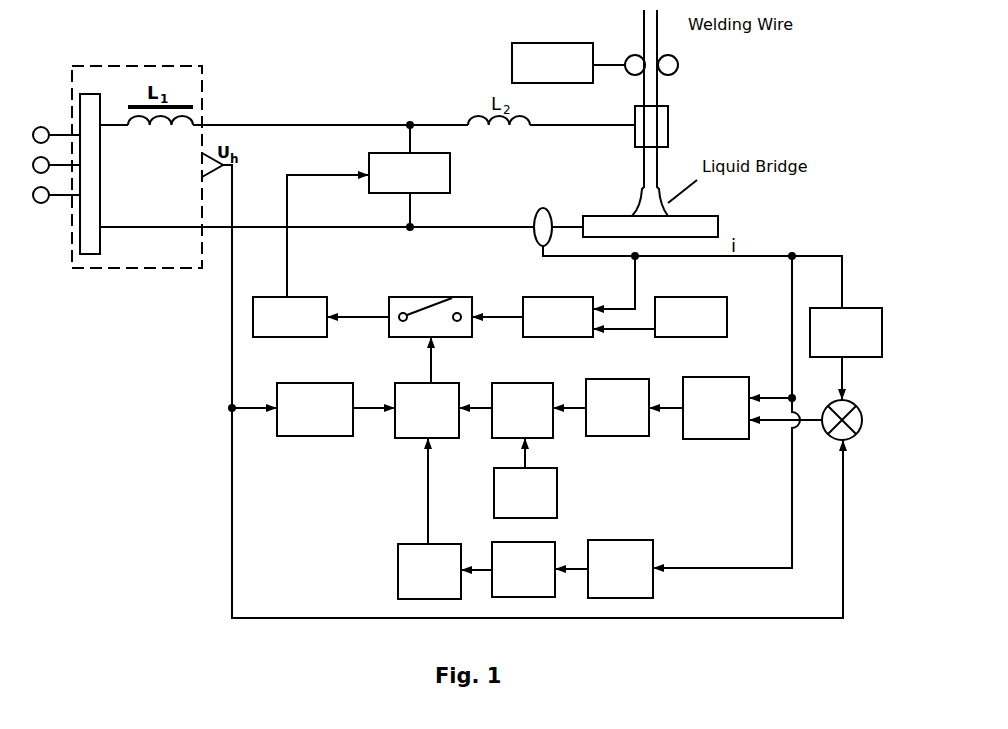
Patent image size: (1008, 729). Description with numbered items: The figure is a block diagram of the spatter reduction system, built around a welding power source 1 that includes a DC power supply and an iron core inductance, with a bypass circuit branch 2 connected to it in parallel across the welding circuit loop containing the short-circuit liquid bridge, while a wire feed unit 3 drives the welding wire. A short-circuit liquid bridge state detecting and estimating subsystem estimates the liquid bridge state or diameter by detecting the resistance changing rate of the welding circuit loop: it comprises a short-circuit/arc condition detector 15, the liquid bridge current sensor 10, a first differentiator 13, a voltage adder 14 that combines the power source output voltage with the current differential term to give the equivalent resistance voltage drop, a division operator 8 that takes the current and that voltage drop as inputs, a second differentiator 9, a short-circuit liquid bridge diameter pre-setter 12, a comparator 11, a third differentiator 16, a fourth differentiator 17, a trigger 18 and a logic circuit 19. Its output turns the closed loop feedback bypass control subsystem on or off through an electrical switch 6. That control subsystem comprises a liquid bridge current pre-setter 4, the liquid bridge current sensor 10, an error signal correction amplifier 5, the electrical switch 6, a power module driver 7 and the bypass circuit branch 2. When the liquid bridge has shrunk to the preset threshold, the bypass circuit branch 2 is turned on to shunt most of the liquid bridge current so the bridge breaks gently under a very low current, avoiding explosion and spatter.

The welding power source 1 is at (117, 167).
The bypass circuit branch 2 is at (409, 173).
The wire feed drive 3 is at (552, 63).
The liquid bridge current pre-setter 4 is at (691, 317).
The error signal correction amplifier 5 is at (558, 317).
The electrical switch 6 is at (430, 317).
The power module driver 7 is at (290, 317).
The division operator 8 is at (716, 408).
The second differentiator 9 is at (617, 407).
The liquid bridge current sensor 10 is at (547, 213).
The comparator 11 is at (522, 410).
The short-circuit liquid bridge diameter pre-setter 12 is at (525, 493).
The first differentiator 13 is at (846, 332).
The voltage adder 14 is at (862, 420).
The short-circuit/arc condition detector 15 is at (315, 409).
The third differentiator 16 is at (620, 569).
The fourth differentiator 17 is at (523, 569).
The trigger 18 is at (429, 571).
The logic circuit 19 is at (427, 410).